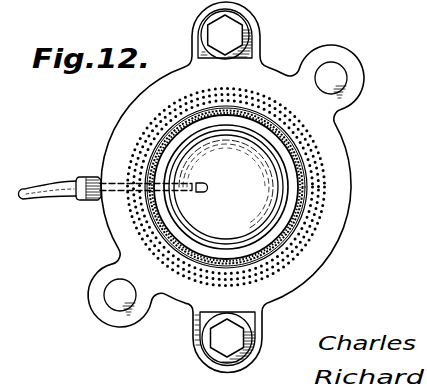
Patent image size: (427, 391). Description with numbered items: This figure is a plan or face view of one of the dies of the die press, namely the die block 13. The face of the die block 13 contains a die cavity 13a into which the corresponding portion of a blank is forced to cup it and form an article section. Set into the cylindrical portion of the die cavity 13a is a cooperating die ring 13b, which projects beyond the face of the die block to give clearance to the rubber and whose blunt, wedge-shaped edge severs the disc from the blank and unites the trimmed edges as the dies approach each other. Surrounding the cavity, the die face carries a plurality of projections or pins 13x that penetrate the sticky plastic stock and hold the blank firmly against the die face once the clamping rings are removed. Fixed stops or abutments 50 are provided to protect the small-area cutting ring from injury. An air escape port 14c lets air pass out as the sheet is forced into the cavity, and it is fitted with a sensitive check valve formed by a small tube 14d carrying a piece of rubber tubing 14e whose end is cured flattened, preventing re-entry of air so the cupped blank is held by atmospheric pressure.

The stationary die block 13 is at (338, 209).
The die cavity 13a is at (276, 175).
The die ring 13b is at (291, 226).
The projections or pins 13x is at (142, 137).
The air escape port 14c is at (110, 199).
The small tube 14d is at (88, 177).
The rubber tubing 14e is at (40, 198).
The fixed stops or abutments 50 is at (336, 80).